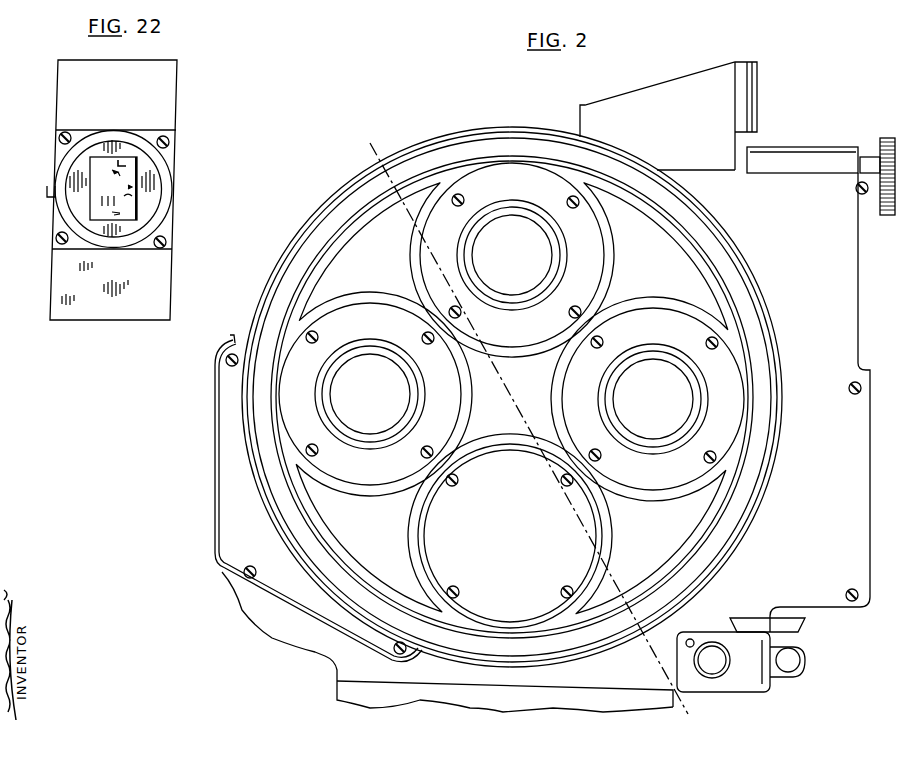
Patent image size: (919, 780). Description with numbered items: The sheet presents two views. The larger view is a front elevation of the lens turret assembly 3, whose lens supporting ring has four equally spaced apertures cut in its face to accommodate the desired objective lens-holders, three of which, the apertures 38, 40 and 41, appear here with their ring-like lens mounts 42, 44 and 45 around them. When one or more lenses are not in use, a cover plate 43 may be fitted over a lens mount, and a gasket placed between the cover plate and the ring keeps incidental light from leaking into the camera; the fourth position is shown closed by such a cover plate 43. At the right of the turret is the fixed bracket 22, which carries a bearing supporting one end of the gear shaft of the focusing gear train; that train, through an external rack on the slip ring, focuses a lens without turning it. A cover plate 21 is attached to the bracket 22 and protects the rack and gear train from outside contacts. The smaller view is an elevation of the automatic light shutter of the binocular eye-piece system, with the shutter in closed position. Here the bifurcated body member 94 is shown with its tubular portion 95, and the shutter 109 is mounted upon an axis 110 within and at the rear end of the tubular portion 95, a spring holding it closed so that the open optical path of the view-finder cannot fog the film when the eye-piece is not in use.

In FIG. 2, the lens turret assembly 3 is at (364, 148).
In FIG. 2, the cover plate 21 is at (216, 514).
In FIG. 2, the bracket 22 is at (857, 291).
In FIG. 2, the aperture 38 is at (372, 353).
In FIG. 2, the aperture 40 is at (653, 358).
In FIG. 2, the aperture 41 is at (512, 214).
In FIG. 2, the lens mount 42 is at (362, 478).
In FIG. 2, the cover plate 43 is at (597, 531).
In FIG. 2, the lens mount 44 is at (690, 323).
In FIG. 2, the lens mount 45 is at (598, 238).
In FIG. 22, the bifurcated body member 94 is at (58, 283).
In FIG. 22, the tubular portion 95 is at (167, 173).
In FIG. 22, the shutter 109 is at (95, 175).
In FIG. 22, the axis 110 is at (125, 167).